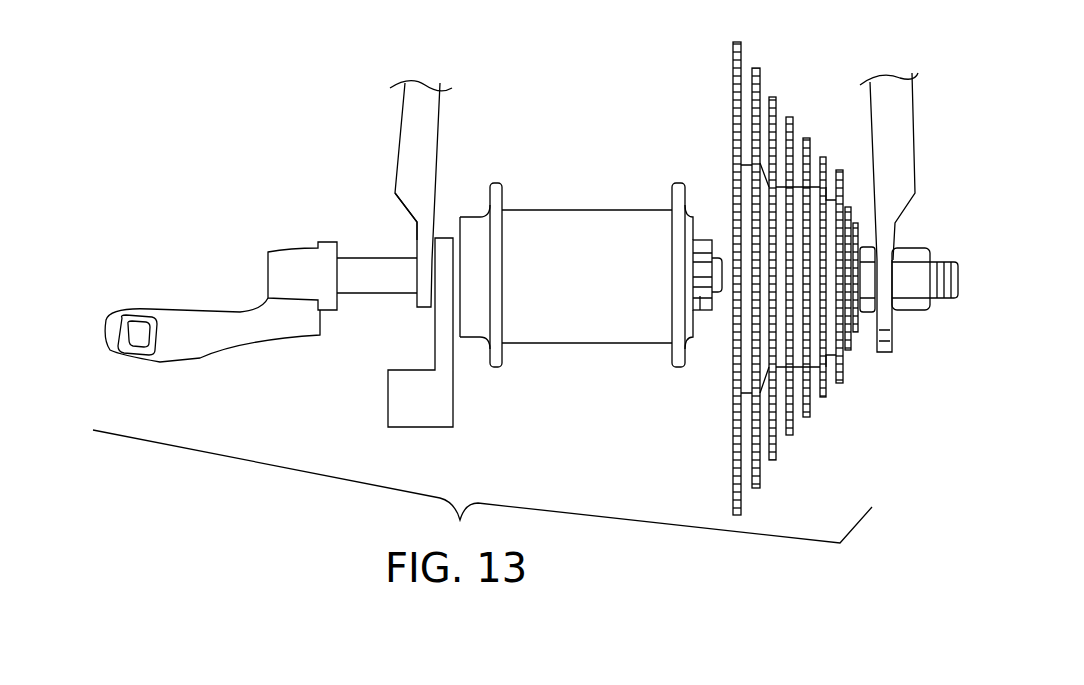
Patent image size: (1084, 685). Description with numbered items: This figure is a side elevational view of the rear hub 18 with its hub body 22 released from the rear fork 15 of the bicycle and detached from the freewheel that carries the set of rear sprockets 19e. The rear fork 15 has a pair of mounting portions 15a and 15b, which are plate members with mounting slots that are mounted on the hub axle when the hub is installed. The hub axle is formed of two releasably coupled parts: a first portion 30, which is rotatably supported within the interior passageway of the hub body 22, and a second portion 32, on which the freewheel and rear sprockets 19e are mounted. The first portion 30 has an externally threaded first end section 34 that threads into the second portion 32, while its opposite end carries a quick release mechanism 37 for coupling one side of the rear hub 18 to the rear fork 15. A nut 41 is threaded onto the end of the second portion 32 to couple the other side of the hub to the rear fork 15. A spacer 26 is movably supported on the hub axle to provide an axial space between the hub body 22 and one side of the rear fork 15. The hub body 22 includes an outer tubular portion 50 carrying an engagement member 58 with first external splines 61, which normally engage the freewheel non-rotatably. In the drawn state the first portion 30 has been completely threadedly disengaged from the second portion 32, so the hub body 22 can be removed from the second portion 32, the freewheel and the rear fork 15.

The rear fork 15 is at (444, 111).
The mounting portion 15a is at (412, 227).
The mounting portion 15b is at (897, 235).
The rear hub 18 is at (637, 140).
The rear sprockets 19e is at (762, 72).
The hub body 22 is at (583, 352).
The spacer 26 is at (376, 392).
The first portion 30 is at (357, 300).
The second portion 32 is at (943, 302).
The first end section 34 is at (720, 296).
The quick release mechanism 37 is at (266, 256).
The nut 41 is at (907, 318).
The outer tubular portion 50 is at (538, 347).
The engagement member 58 is at (707, 230).
The first external splines 61 is at (700, 308).